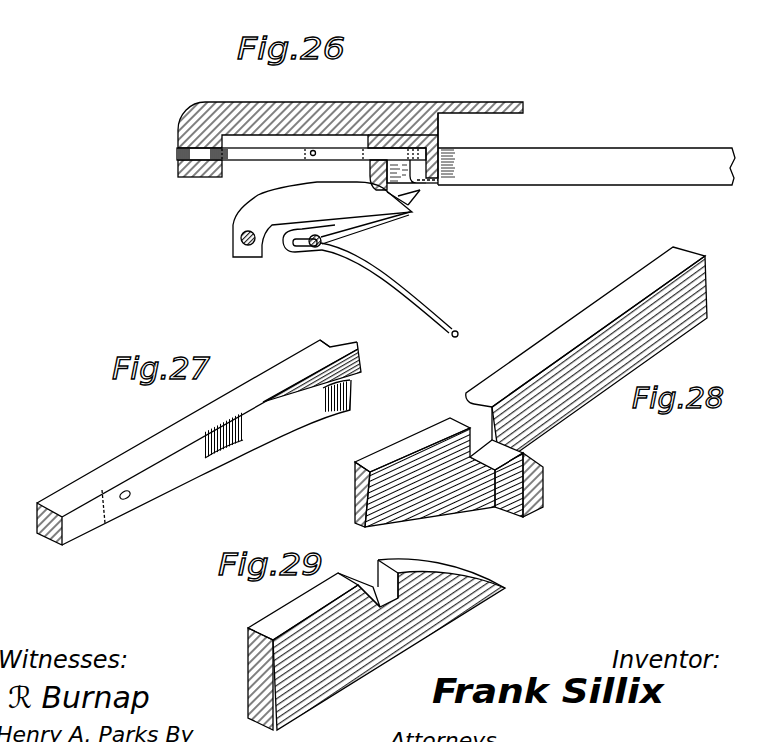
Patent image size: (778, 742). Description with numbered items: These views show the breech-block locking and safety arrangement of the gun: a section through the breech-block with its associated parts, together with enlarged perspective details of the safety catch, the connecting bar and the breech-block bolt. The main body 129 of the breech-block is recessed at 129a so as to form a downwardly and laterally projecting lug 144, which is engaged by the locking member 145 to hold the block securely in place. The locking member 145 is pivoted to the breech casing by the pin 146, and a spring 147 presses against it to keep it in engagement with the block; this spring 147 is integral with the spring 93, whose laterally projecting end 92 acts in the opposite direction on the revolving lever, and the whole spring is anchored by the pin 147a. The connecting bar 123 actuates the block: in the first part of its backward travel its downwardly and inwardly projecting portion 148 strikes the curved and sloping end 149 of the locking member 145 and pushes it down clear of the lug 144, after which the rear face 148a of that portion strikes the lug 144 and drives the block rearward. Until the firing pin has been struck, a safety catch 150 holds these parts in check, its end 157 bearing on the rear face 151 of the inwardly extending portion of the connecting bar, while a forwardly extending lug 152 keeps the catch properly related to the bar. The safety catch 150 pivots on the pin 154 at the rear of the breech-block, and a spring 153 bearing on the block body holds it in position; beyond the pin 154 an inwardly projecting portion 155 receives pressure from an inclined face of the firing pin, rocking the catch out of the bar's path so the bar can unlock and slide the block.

In FIG. 26, the pin 154 is at (207, 103).
In FIG. 26, the inwardly projecting portion 155 is at (180, 152).
In FIG. 26, the safety catch 150 is at (281, 150).
In FIG. 27, the safety catch 150 is at (282, 377).
In FIG. 26, the main body of the breech-block 129 is at (393, 158).
In FIG. 26, the recess 129a is at (408, 160).
In FIG. 26, the lug 144 is at (398, 198).
In FIG. 26, the downwardly and inwardly projecting portion 148 is at (432, 192).
In FIG. 28, the downwardly and inwardly projecting portion 148 is at (513, 521).
In FIG. 28, the rear face 148a is at (477, 478).
In FIG. 26, the forwardly extending lug 152 is at (420, 158).
In FIG. 27, the forwardly extending lug 152 is at (362, 346).
In FIG. 26, the rear face 151 is at (442, 150).
In FIG. 28, the rear face 151 is at (466, 437).
In FIG. 26, the connecting bar 123 is at (557, 158).
In FIG. 28, the connecting bar 123 is at (573, 315).
In FIG. 26, the curved and sloping end 149 is at (417, 202).
In FIG. 29, the curved and sloping end 149 is at (443, 570).
In FIG. 26, the locking member 145 is at (264, 212).
In FIG. 26, the pin 146 is at (241, 246).
In FIG. 26, the pin 147a is at (310, 247).
In FIG. 26, the spring 147 is at (355, 228).
In FIG. 26, the spring 93 is at (421, 312).
In FIG. 26, the laterally projecting end of the spring 92 is at (454, 338).
In FIG. 27, the end of the safety catch 157 is at (340, 335).
In FIG. 27, the spring 153 is at (323, 407).